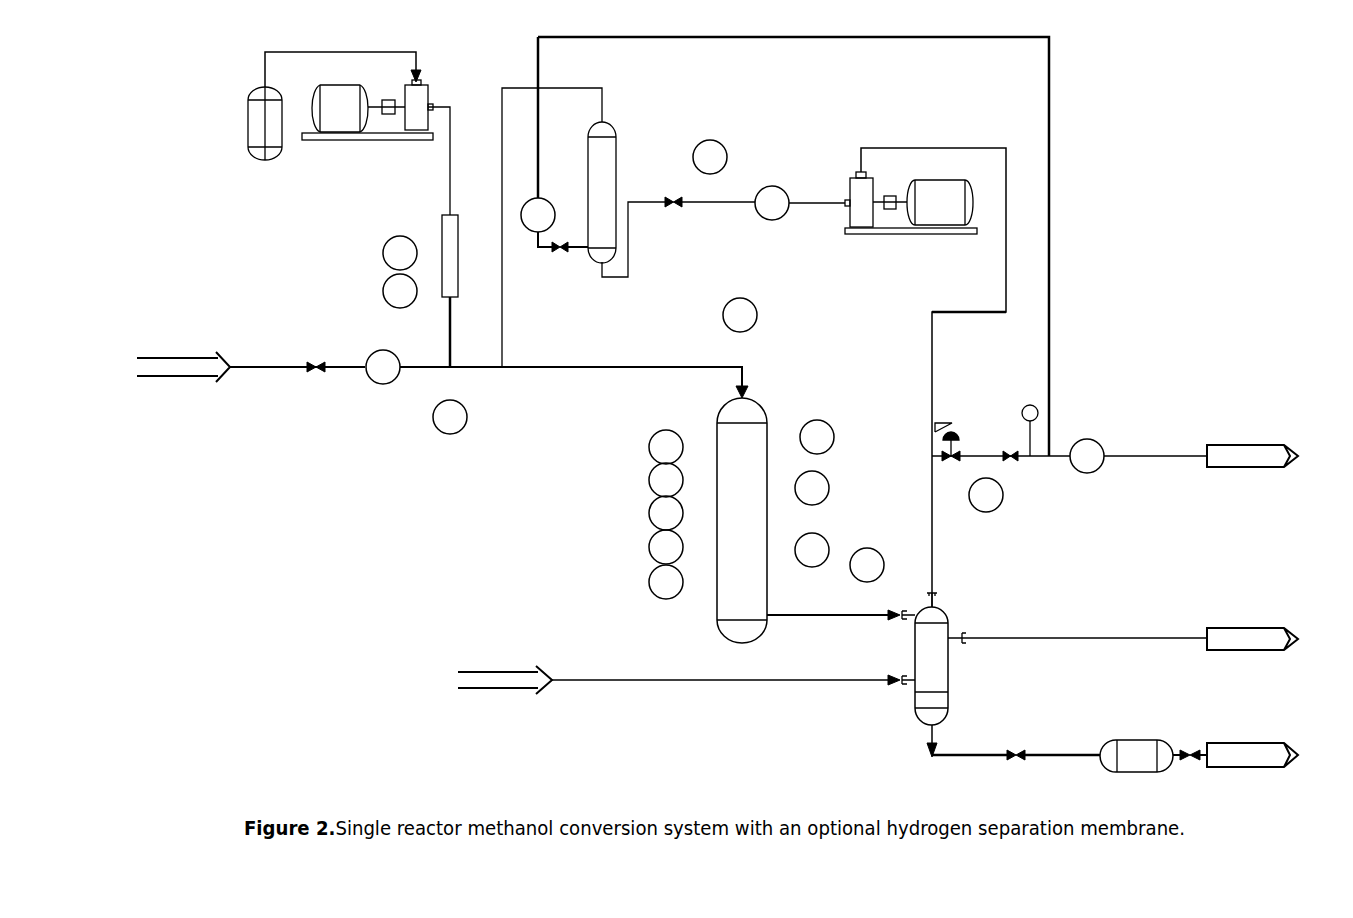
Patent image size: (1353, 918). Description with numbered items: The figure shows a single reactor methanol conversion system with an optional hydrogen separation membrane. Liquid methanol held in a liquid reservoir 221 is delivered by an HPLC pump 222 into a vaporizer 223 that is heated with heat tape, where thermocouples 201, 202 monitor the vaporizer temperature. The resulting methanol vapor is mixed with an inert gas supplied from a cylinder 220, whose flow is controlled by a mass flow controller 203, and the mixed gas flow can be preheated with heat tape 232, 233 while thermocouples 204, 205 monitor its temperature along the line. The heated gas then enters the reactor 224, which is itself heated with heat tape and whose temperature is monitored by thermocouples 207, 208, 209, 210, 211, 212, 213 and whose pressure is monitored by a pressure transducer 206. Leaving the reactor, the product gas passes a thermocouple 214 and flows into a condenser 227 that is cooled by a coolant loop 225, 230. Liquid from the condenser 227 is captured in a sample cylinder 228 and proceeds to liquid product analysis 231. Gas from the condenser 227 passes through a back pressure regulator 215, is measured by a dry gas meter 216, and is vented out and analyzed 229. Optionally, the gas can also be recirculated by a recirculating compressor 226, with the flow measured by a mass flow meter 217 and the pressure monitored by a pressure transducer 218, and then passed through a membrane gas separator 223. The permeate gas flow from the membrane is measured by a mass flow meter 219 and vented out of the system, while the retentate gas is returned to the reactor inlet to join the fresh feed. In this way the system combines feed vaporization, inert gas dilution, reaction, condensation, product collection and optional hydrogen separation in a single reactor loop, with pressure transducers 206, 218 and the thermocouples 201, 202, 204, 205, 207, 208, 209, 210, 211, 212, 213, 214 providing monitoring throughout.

The thermocouple 201 is at (450, 253).
The thermocouple 202 is at (442, 291).
The mass flow controller 203 is at (383, 367).
The thermocouple 204 is at (450, 367).
The thermocouple 205 is at (741, 367).
The pressure transducer 206 is at (767, 437).
The thermocouple 207 is at (742, 447).
The thermocouple 208 is at (742, 480).
The thermocouple 209 is at (742, 513).
The thermocouple 210 is at (742, 547).
The thermocouple 211 is at (742, 582).
The thermocouple 212 is at (767, 488).
The thermocouple 213 is at (767, 550).
The thermocouple 214 is at (867, 615).
The back pressure regulator 215 is at (951, 456).
The dry gas meter 216 is at (872, 255).
The mass flow meter 217 is at (800, 203).
The pressure transducer 218 is at (710, 202).
The mass flow meter 219 is at (554, 144).
The cylinder 220 is at (170, 348).
The liquid reservoir 221 is at (252, 181).
The HPLC pump 222 is at (355, 163).
The vaporizer / membrane gas separator 223 is at (345, 261).
The reactor 224 is at (604, 508).
The coolant loop 225 is at (485, 662).
The recirculating compressor 226 is at (897, 258).
The condenser 227 is at (977, 671).
The sample cylinder 228 is at (1120, 798).
The vent and analysis 229 is at (1227, 437).
The coolant loop 230 is at (1222, 626).
The liquid product analysis 231 is at (1234, 741).
The heat tape 232 is at (418, 360).
The heat tape 233 is at (622, 360).